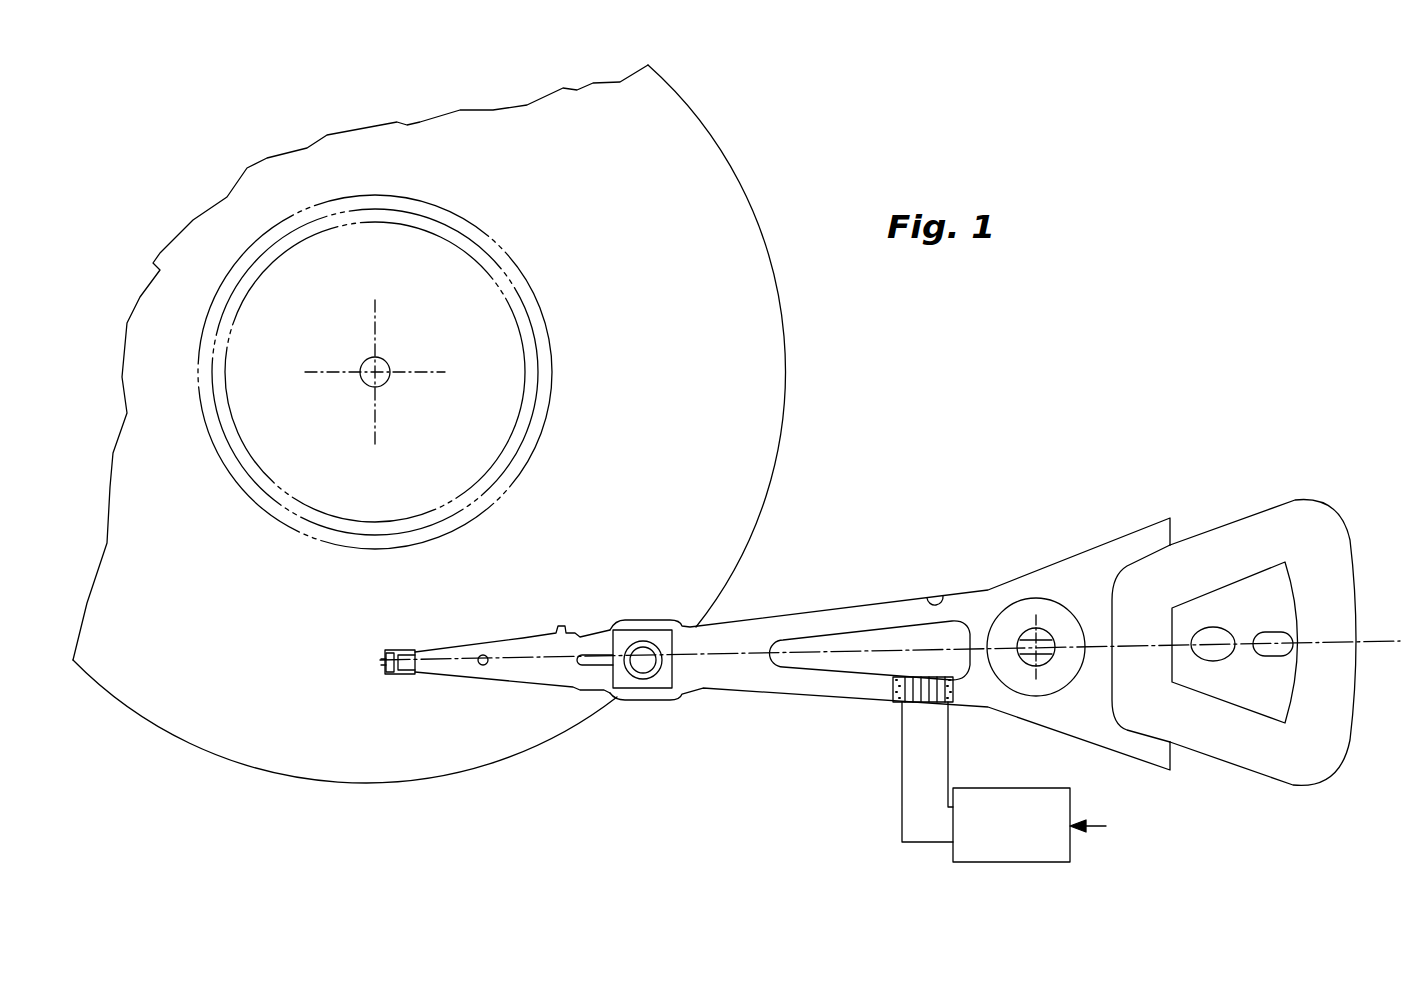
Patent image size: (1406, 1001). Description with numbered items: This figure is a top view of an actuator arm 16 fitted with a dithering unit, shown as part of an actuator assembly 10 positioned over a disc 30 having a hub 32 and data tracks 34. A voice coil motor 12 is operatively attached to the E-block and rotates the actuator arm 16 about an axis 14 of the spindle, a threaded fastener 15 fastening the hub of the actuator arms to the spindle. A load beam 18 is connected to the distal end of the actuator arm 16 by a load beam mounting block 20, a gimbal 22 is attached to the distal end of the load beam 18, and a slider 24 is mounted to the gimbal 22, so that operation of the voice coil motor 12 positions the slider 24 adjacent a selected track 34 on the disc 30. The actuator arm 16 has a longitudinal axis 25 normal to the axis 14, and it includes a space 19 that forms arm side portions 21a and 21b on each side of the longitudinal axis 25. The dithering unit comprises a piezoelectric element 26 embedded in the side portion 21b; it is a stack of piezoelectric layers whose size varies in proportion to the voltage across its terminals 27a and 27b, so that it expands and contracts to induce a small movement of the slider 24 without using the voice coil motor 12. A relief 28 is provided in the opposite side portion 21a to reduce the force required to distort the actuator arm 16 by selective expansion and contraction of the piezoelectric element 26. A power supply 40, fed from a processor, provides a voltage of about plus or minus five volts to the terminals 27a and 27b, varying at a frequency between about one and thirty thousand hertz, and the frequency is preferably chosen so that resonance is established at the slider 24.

The disk drive actuator assembly 10 is at (1005, 455).
The voice coil motor 12 is at (1353, 542).
The axis 14 is at (1026, 663).
The threaded fastener 15 is at (1045, 640).
The actuator arm 16 is at (873, 602).
The load beam 18 is at (527, 637).
The space 19 is at (840, 657).
The load beam mounting block 20 is at (648, 628).
The arm side portion 21a is at (820, 610).
The arm side portion 21b is at (848, 704).
The gimbal 22 is at (414, 648).
The slider 24 is at (390, 678).
The longitudinal axis 25 is at (733, 655).
The piezoelectric element 26 is at (898, 735).
The terminal 27a is at (895, 705).
The terminal 27b is at (950, 705).
The relief 28 is at (938, 598).
The disc 30 is at (778, 438).
The disk hub 32 is at (388, 380).
The track 34 is at (522, 466).
The power supply 40 is at (1013, 788).